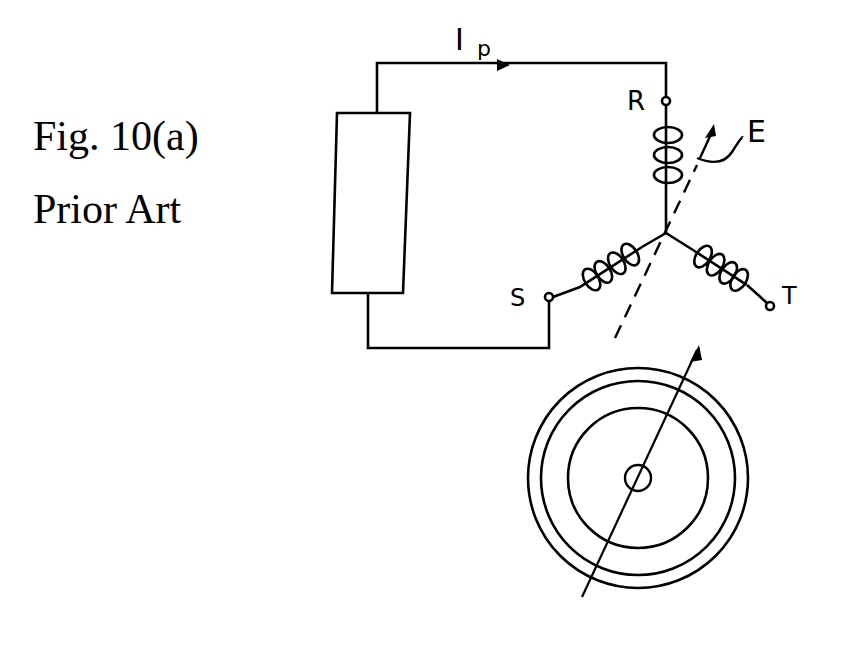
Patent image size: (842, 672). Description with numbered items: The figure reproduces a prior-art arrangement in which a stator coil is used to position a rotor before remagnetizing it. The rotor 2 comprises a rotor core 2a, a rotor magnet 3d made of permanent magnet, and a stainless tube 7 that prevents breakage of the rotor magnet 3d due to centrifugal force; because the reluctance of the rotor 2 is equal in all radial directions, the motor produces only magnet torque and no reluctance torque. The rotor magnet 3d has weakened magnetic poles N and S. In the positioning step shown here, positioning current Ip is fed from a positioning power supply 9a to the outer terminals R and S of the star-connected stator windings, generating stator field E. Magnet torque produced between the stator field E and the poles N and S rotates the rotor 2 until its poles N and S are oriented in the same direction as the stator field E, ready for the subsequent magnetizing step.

The positioning power supply 9a is at (371, 203).
The rotor 2 is at (489, 543).
The stainless tube 7 is at (713, 402).
The rotor magnet 3d is at (715, 453).
The rotor core 2a is at (678, 492).